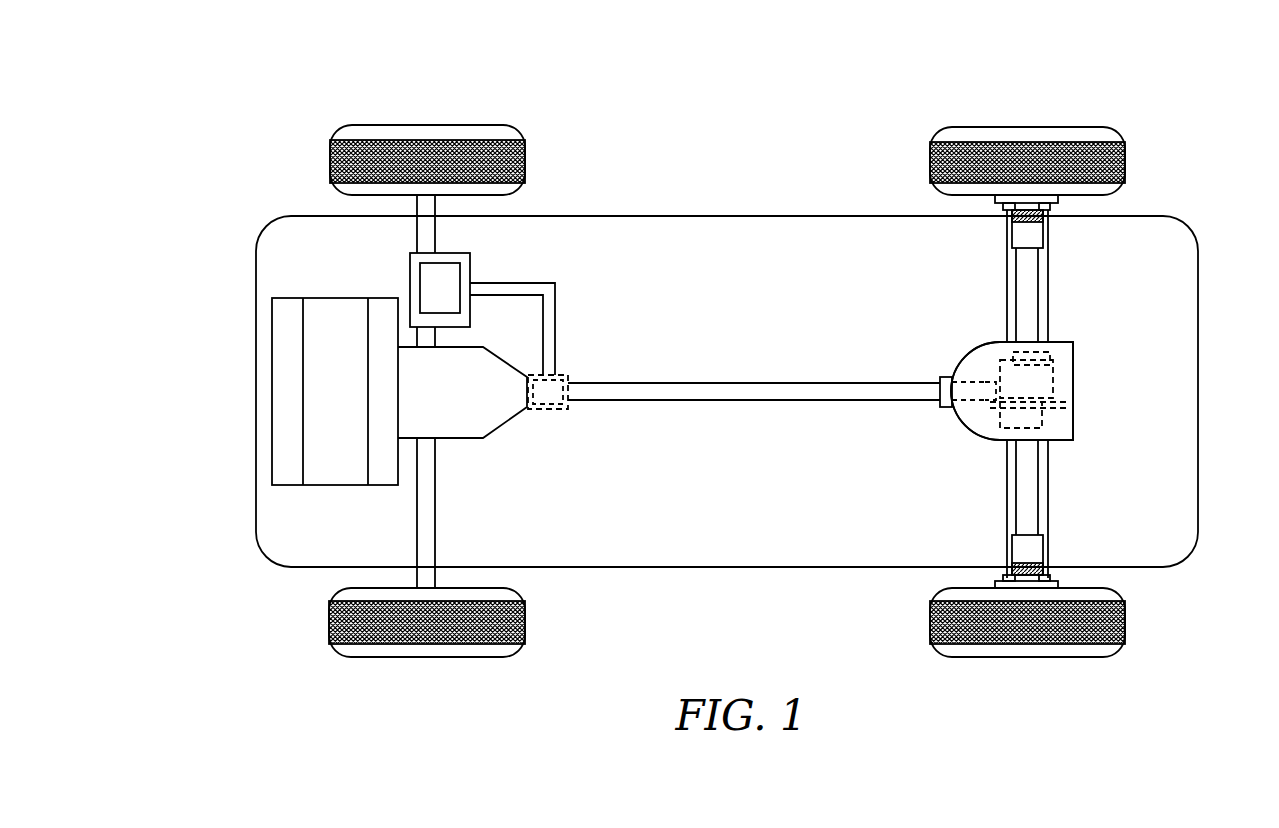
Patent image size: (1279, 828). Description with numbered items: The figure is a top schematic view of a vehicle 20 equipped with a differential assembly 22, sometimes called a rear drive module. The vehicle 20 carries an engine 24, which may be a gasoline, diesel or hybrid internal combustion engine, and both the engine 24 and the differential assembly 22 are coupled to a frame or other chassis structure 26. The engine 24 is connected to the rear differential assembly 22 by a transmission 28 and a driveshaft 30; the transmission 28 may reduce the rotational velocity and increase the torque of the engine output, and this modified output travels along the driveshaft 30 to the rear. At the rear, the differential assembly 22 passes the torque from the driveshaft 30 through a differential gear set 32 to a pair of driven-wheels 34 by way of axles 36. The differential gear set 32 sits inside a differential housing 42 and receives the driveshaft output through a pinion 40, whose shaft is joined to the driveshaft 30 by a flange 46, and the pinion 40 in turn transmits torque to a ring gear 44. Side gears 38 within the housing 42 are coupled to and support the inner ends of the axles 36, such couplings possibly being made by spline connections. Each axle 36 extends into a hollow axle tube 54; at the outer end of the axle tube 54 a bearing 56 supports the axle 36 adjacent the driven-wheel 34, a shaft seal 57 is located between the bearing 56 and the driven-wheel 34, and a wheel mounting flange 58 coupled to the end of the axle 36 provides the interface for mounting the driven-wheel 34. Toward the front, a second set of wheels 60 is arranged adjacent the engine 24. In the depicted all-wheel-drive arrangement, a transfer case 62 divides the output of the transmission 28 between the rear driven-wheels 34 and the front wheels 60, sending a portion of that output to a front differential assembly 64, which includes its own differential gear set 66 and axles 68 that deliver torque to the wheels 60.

The vehicle 20 is at (798, 88).
The differential assembly 22 is at (1082, 410).
The engine 24 is at (272, 402).
The frame or chassis structure 26 is at (765, 216).
The transmission 28 is at (500, 425).
The driveshaft 30 is at (780, 381).
The differential gear set 32 is at (1055, 385).
The driven-wheels 34 is at (1060, 127).
The axles 36 is at (1038, 315).
The side gears 38 is at (1050, 356).
The pinion 40 is at (997, 388).
The differential housing 42 is at (955, 420).
The ring gear 44 is at (1072, 403).
The flange 46 is at (940, 380).
The axle tube 54 is at (1007, 288).
The bearing 56 is at (1012, 232).
The shaft seal 57 is at (1005, 209).
The wheel mounting flange 58 is at (1058, 200).
The second set of wheels 60 is at (415, 125).
The transfer case 62 is at (552, 410).
The front differential assembly 64 is at (402, 296).
The differential gear set 66 is at (460, 276).
The axles 68 is at (408, 228).